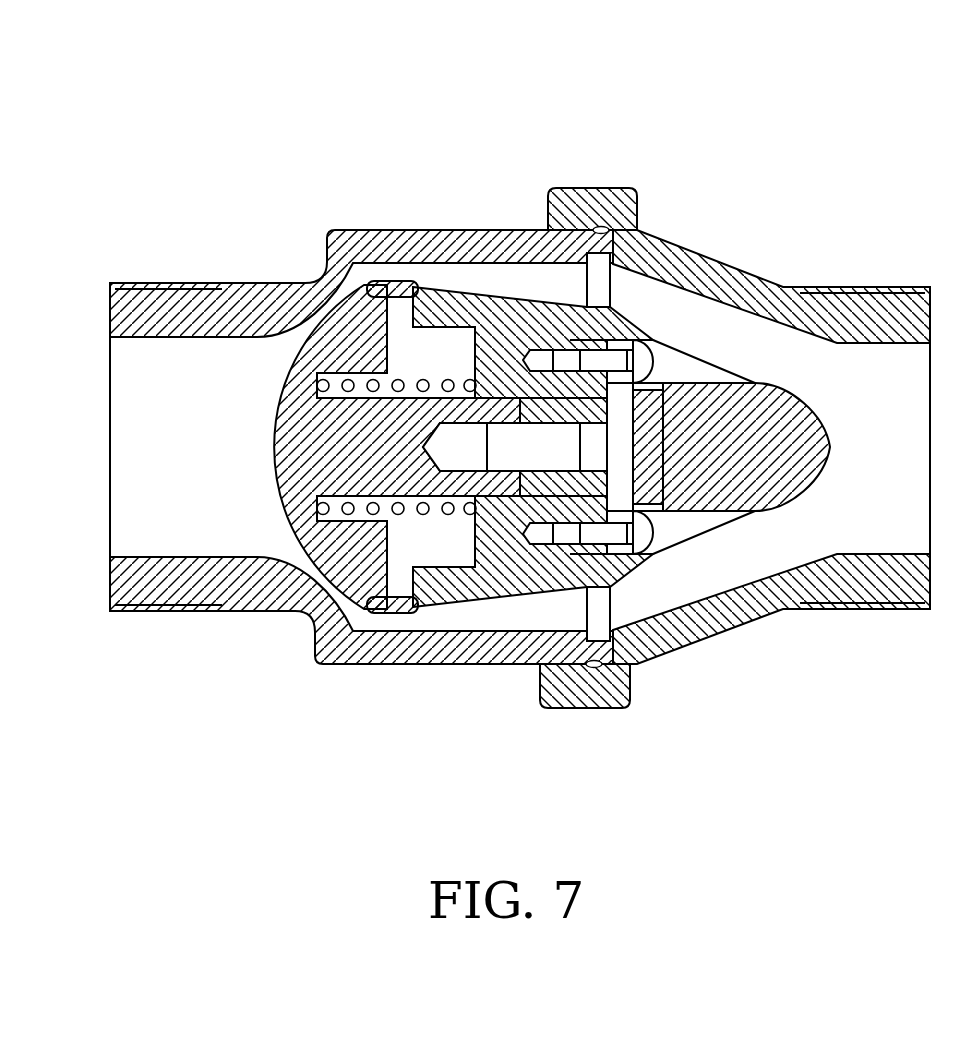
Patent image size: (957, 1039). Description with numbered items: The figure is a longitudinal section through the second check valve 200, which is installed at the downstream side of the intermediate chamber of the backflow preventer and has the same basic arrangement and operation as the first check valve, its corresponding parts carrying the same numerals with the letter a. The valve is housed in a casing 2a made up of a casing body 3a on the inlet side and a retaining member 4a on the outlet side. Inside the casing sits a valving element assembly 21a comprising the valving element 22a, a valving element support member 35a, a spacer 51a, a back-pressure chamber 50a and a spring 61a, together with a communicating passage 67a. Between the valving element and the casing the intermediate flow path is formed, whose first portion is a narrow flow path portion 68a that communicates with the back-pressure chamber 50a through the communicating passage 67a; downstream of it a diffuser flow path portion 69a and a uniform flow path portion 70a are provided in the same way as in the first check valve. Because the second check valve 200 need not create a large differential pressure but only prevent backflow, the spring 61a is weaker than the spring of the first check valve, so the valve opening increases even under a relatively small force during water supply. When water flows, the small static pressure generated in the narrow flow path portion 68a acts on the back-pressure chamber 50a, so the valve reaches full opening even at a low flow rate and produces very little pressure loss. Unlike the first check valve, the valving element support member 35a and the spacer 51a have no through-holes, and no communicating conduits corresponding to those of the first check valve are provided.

The second check valve 200 is at (772, 177).
The casing 2a is at (247, 290).
The casing body 3a is at (392, 245).
The retaining member 4a is at (777, 293).
The valving element assembly 21a is at (483, 292).
The valving element 22a is at (280, 480).
The valving element support member 35a is at (520, 580).
The back-pressure chamber 50a is at (434, 345).
The spacer 51a is at (773, 480).
The spring 61a is at (437, 505).
The communicating passage 67a is at (357, 620).
The narrow flow path portion 68a is at (372, 282).
The diffuser flow path portion 69a is at (520, 280).
The uniform flow path portion 70a is at (683, 313).